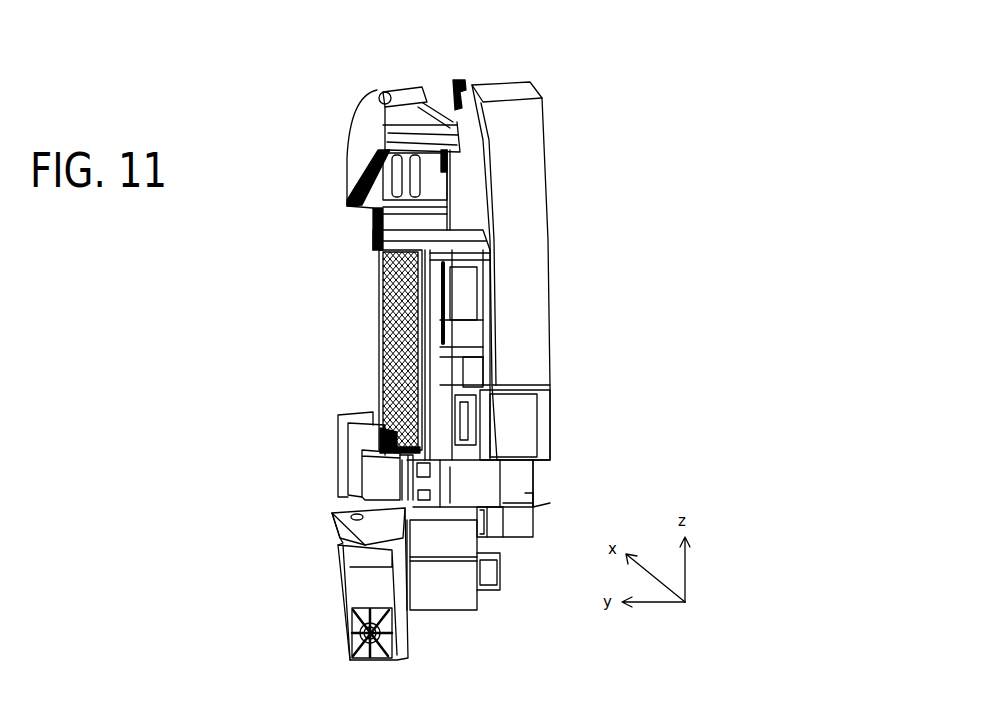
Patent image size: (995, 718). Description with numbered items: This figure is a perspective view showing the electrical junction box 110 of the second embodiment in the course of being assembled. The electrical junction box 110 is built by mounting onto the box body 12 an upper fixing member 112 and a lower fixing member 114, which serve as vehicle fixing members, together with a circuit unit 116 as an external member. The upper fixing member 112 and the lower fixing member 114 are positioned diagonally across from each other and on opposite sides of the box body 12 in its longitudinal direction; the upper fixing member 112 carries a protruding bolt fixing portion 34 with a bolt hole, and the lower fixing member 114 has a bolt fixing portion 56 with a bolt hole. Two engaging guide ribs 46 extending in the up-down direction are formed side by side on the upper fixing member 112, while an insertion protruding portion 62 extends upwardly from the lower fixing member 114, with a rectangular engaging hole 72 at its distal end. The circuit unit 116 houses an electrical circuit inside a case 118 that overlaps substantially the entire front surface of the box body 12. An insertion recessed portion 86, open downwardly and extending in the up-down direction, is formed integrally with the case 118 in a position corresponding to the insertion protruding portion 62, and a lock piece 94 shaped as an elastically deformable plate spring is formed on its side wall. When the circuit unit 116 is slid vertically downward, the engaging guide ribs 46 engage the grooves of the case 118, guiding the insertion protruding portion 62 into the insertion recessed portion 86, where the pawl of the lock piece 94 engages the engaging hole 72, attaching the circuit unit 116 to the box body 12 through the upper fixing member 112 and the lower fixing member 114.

The electrical junction box 110 is at (587, 68).
The upper fixing member 112 is at (330, 107).
The lower fixing member 114 is at (325, 547).
The circuit unit 116 is at (550, 152).
The case 118 is at (520, 215).
The box body 12 is at (360, 277).
The bolt fixing portion 34 is at (360, 140).
The engaging guide rib 46 is at (395, 175).
The bolt fixing portion 56 is at (365, 626).
The insertion protruding portion 62 is at (486, 597).
The engaging hole 72 is at (490, 567).
The insertion recessed portion 86 is at (516, 525).
The lock piece 94 is at (492, 515).